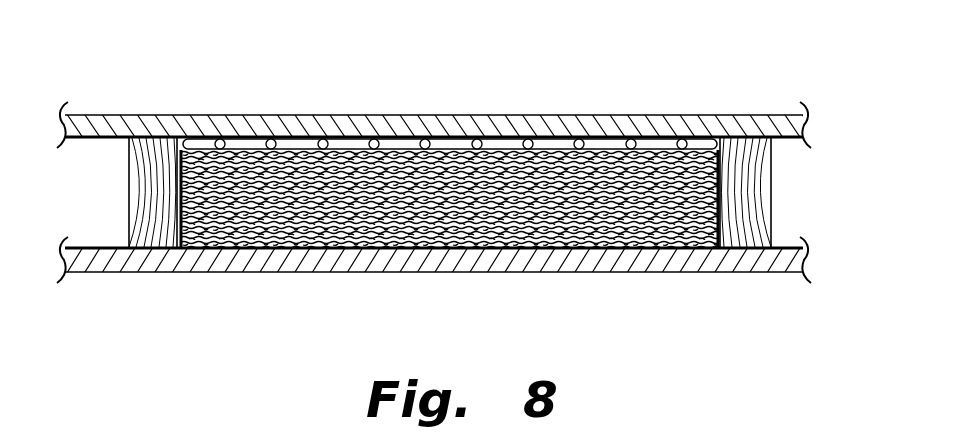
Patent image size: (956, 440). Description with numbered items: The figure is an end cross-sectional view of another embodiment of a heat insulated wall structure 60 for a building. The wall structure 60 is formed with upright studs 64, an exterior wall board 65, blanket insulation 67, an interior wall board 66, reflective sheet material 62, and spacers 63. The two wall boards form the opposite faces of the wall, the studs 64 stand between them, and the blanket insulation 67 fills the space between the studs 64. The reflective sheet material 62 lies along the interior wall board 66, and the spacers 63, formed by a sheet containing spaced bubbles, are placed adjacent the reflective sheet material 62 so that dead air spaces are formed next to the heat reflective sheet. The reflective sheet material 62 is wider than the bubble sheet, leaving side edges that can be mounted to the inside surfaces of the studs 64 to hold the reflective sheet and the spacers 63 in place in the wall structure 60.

The wall structure 60 is at (443, 175).
The reflective sheet material 62 is at (498, 152).
The spacers 63 is at (578, 141).
The upright studs 64 is at (147, 206).
The exterior wall board 65 is at (523, 257).
The interior wall board 66 is at (387, 127).
The blanket insulation 67 is at (446, 209).